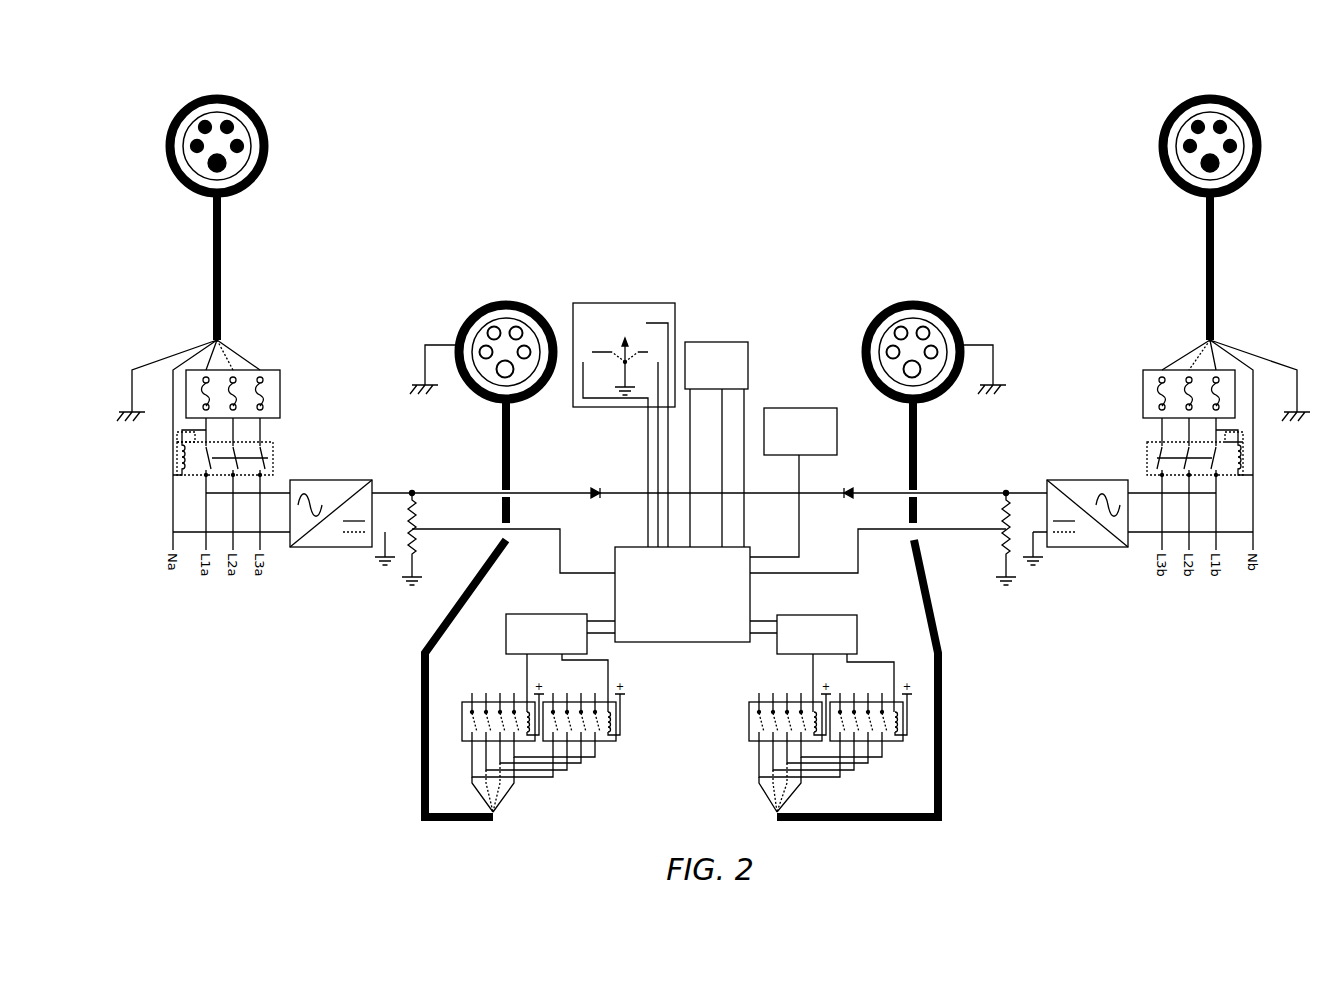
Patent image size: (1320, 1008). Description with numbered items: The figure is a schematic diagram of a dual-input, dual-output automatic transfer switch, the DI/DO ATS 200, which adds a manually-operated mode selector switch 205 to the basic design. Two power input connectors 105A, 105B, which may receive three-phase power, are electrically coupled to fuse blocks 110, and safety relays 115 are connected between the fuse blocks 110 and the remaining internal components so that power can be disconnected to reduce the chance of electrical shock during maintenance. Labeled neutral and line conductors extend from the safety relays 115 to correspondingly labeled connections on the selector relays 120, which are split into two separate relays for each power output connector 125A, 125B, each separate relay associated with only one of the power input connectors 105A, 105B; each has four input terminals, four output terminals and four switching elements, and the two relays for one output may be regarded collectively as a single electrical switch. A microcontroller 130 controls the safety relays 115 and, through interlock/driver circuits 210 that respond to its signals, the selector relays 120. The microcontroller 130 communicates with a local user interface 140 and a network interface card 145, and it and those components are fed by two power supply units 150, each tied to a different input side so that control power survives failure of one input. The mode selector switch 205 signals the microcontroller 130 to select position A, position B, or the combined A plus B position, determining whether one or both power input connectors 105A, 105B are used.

The DI/DO ATS 200 is at (622, 174).
The power input connector 105A is at (218, 94).
The power input connector 105B is at (1207, 94).
The fuse block 110 is at (273, 393).
The safety relay 115 is at (273, 454).
The selector relay 120 is at (630, 702).
The power output connector 125A is at (505, 302).
The power output connector 125B is at (917, 302).
The microcontroller 130 is at (664, 603).
The local user interface 140 is at (782, 443).
The network interface card 145 is at (698, 377).
The power supply unit 150 is at (337, 488).
The mode selector switch 205 is at (610, 303).
The interlock/driver circuit 210 is at (528, 645).